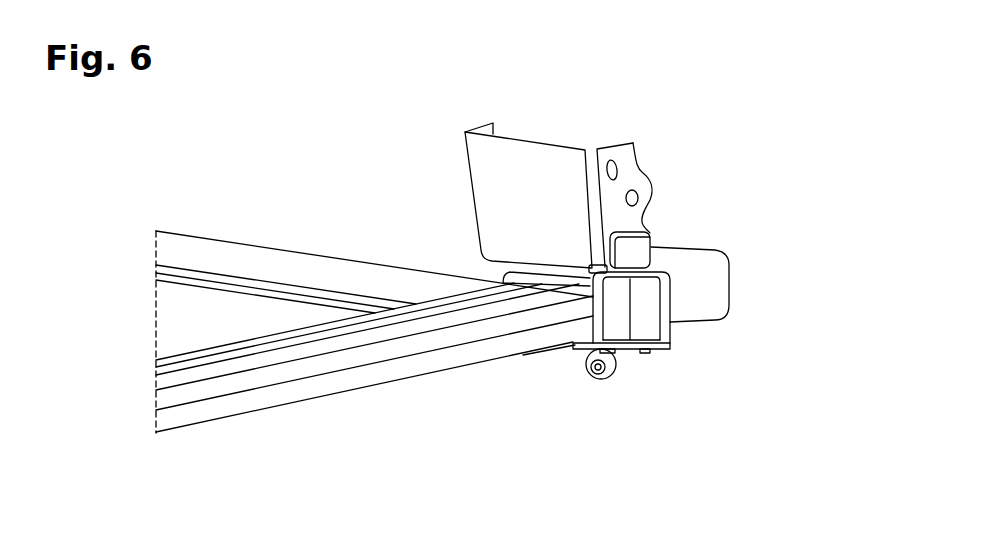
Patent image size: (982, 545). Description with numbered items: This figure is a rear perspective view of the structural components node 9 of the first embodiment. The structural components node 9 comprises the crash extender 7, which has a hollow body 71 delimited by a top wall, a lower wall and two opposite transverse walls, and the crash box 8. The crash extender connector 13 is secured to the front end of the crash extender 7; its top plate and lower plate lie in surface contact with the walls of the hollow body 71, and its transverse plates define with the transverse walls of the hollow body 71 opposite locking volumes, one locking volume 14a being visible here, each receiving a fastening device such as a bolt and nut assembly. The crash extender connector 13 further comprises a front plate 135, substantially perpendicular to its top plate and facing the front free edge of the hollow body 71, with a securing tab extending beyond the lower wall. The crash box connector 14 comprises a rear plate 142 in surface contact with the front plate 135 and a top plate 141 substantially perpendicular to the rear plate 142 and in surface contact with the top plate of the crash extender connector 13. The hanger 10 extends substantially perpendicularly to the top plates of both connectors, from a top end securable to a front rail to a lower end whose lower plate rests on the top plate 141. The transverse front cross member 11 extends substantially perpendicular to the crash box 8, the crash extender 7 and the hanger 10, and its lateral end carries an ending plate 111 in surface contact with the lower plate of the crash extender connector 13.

The crash extender 7 is at (395, 390).
The hollow body 71 is at (300, 405).
The transverse front cross member 11 is at (322, 248).
The ending plate 111 is at (556, 353).
The hanger 10 is at (654, 166).
The top plate 141 is at (658, 262).
The crash box 8 is at (752, 271).
The front plate 135 is at (647, 303).
The rear plate 142 is at (667, 317).
The crash box connector 14 is at (672, 344).
The crash extender connector 13 is at (650, 348).
The locking volume 14a is at (574, 352).
The structural components node 9 is at (620, 408).